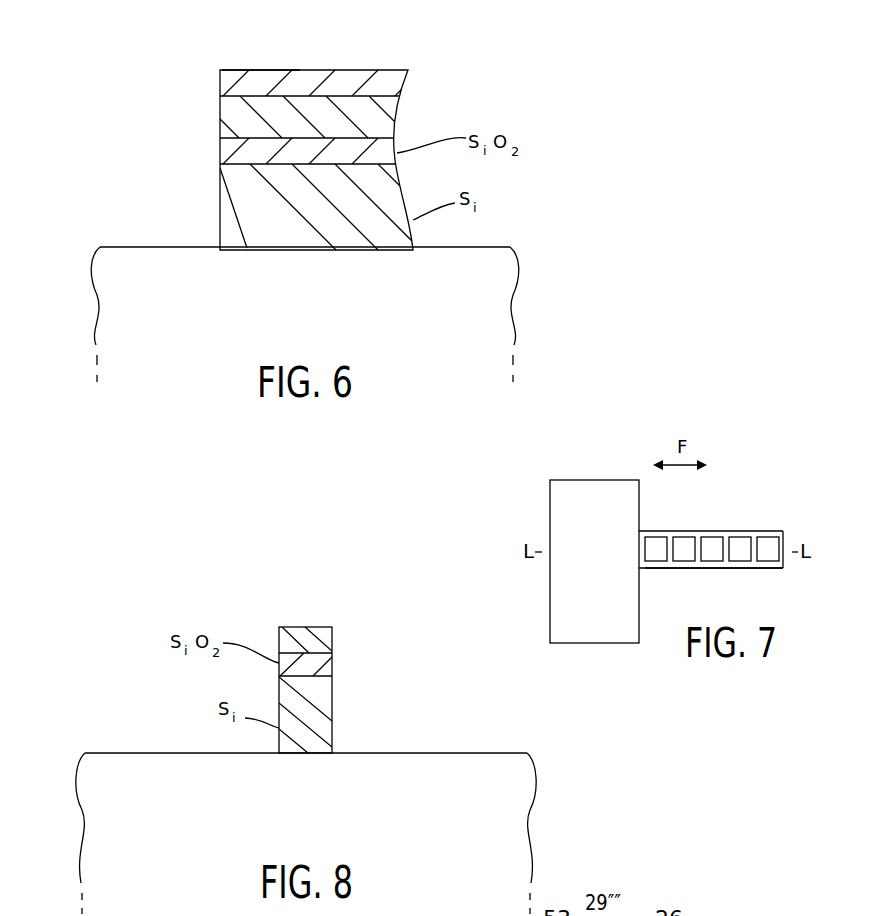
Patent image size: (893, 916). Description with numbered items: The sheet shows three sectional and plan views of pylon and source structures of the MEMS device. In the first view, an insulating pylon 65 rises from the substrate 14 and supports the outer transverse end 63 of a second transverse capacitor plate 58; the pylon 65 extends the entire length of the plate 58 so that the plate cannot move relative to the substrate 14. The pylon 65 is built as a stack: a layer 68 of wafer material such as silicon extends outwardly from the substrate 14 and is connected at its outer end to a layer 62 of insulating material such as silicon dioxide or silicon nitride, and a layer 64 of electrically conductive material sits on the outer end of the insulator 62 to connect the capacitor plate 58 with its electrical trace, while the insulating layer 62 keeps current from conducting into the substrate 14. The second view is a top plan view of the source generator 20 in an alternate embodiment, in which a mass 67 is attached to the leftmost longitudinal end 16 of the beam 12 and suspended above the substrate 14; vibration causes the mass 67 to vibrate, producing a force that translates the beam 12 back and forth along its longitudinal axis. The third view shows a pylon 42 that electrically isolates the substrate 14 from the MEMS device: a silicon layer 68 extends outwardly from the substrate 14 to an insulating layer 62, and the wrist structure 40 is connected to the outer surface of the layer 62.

In FIG. 6, the insulating pylon 65 is at (259, 139).
In FIG. 6, the outer transverse end 63 is at (240, 70).
In FIG. 6, the second transverse capacitor plate 58 is at (343, 70).
In FIG. 6, the layer of electrically conductive material 64 is at (220, 106).
In FIG. 6, the layer of insulating material 62 is at (220, 147).
In FIG. 8, the layer of insulating material 62 is at (333, 667).
In FIG. 6, the layer of wafer material 68 is at (220, 210).
In FIG. 8, the layer of wafer material 68 is at (333, 727).
In FIG. 6, the substrate 14 is at (309, 316).
In FIG. 7, the substrate 14 is at (733, 602).
In FIG. 8, the substrate 14 is at (318, 821).
In FIG. 7, the source generator 20 is at (635, 535).
In FIG. 7, the mass 67 is at (600, 479).
In FIG. 7, the beam 12 is at (719, 530).
In FIG. 7, the leftmost longitudinal end 16 is at (647, 549).
In FIG. 8, the pylon 42 is at (259, 666).
In FIG. 8, the wrist structure 40 is at (333, 638).